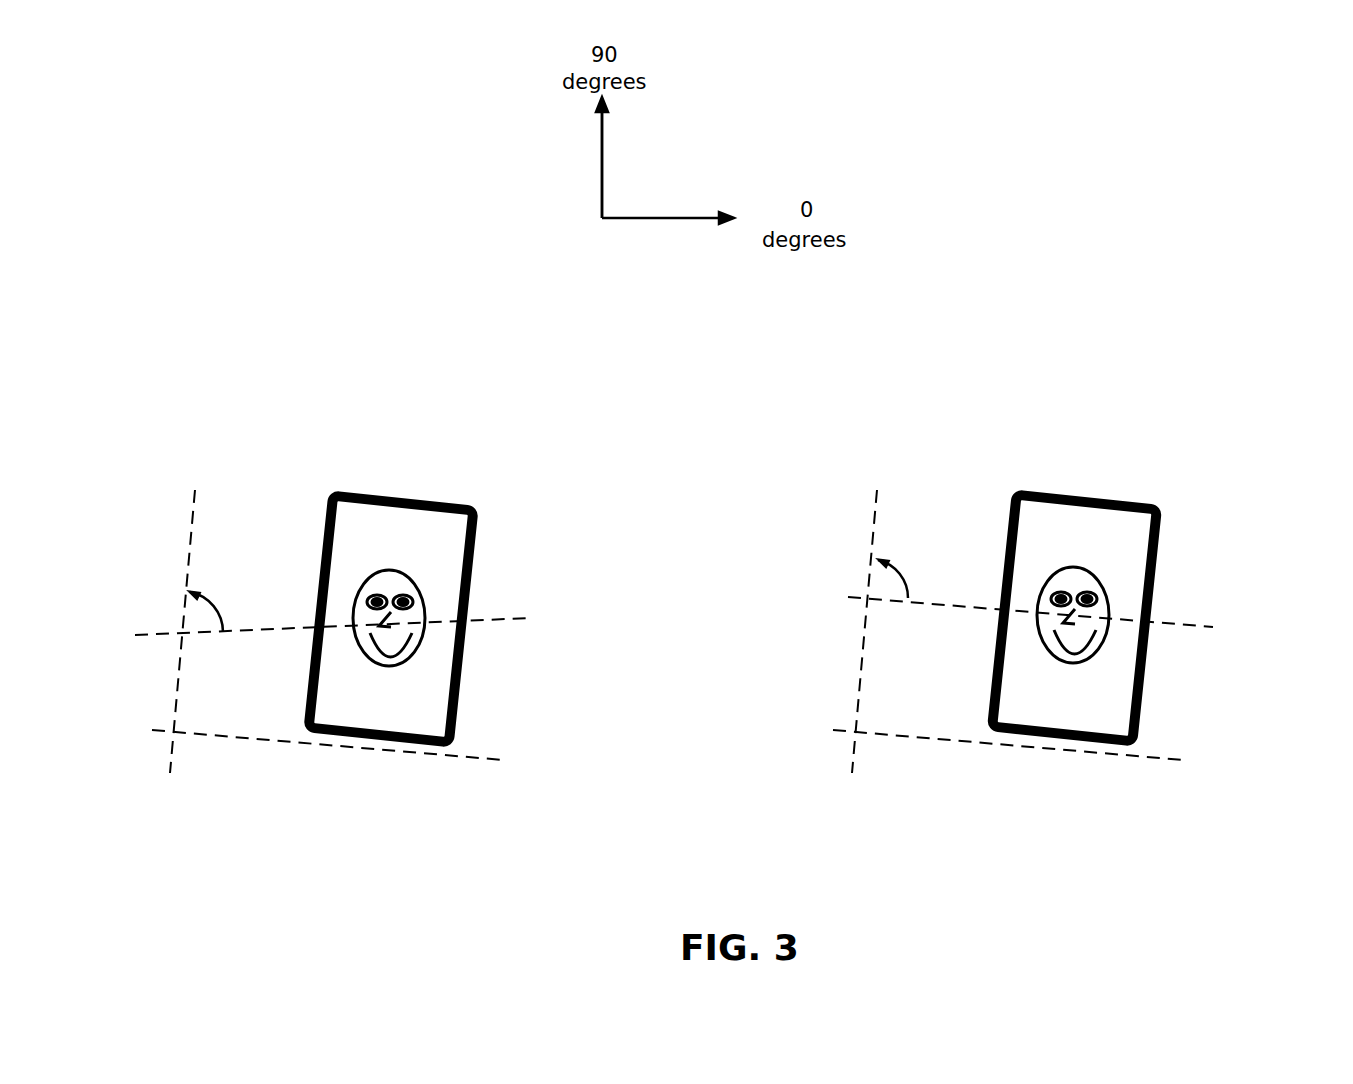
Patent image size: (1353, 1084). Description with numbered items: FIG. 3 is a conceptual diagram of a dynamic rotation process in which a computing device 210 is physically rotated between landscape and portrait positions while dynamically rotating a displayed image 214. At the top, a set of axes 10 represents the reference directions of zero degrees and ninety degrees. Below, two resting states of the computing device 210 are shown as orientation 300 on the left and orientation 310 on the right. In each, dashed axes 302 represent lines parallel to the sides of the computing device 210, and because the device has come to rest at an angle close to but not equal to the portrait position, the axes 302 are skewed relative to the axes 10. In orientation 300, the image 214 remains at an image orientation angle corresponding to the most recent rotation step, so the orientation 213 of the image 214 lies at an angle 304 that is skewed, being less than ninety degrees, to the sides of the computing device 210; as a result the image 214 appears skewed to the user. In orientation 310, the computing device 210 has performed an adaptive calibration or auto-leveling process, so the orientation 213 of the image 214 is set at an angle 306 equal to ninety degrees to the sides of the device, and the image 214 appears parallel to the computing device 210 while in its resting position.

The axes 10 is at (600, 207).
The orientation 300 is at (300, 359).
The orientation 310 is at (982, 359).
The angle 304 is at (212, 597).
The angle 306 is at (895, 563).
The computing device 210 is at (478, 507).
The image 214 is at (427, 617).
The orientation 213 is at (523, 620).
The axes 302 is at (175, 732).